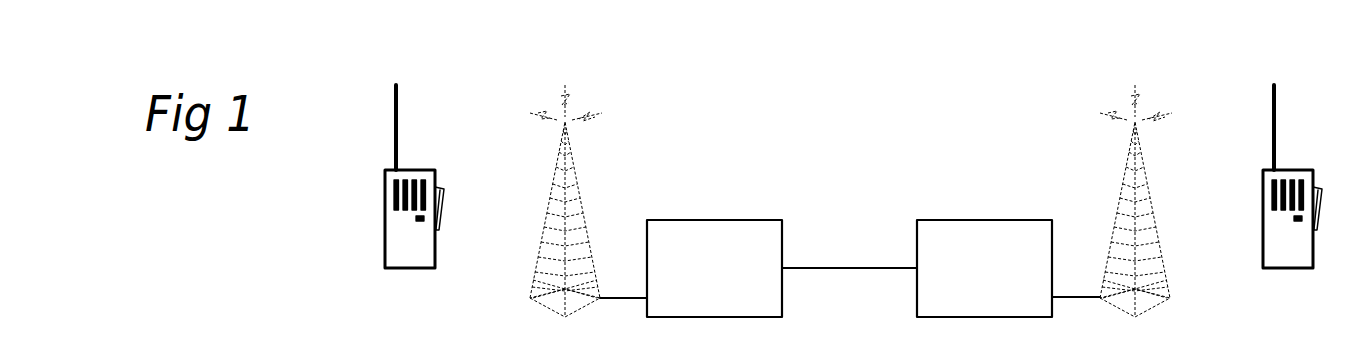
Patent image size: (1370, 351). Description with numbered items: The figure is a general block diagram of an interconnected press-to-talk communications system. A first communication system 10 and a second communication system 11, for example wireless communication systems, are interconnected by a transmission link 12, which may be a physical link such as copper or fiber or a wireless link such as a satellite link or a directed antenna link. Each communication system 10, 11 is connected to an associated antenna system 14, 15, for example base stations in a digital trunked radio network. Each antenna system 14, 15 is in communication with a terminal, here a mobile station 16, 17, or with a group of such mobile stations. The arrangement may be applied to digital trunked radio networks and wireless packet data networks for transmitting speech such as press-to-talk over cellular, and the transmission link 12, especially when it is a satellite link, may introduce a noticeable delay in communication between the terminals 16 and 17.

The first communication system 10 is at (765, 233).
The second communication system 11 is at (1033, 233).
The transmission link 12 is at (847, 265).
The antenna system 14 is at (572, 177).
The antenna system 15 is at (1142, 176).
The mobile station 16 is at (423, 172).
The mobile station 17 is at (1305, 176).